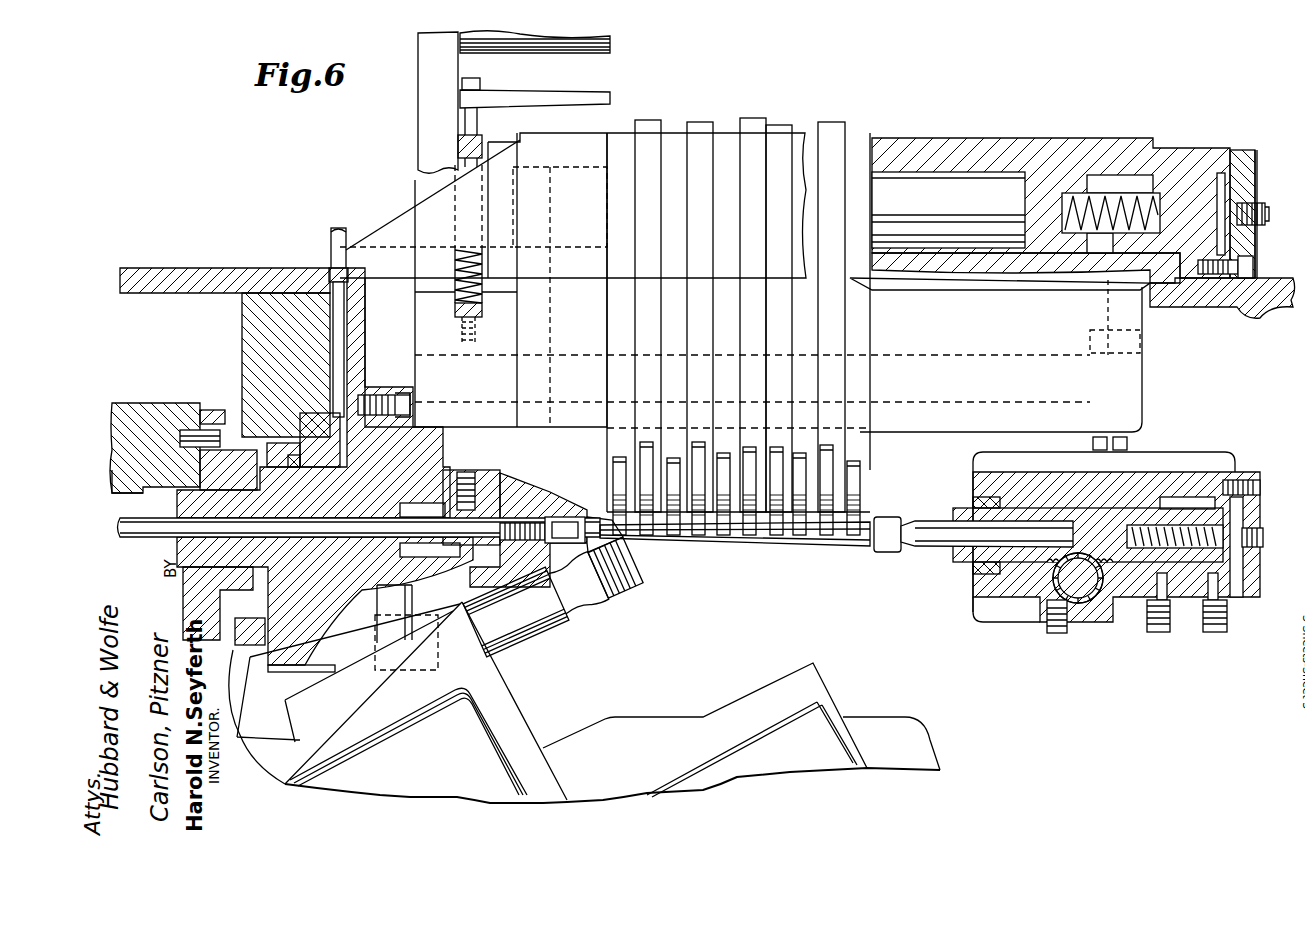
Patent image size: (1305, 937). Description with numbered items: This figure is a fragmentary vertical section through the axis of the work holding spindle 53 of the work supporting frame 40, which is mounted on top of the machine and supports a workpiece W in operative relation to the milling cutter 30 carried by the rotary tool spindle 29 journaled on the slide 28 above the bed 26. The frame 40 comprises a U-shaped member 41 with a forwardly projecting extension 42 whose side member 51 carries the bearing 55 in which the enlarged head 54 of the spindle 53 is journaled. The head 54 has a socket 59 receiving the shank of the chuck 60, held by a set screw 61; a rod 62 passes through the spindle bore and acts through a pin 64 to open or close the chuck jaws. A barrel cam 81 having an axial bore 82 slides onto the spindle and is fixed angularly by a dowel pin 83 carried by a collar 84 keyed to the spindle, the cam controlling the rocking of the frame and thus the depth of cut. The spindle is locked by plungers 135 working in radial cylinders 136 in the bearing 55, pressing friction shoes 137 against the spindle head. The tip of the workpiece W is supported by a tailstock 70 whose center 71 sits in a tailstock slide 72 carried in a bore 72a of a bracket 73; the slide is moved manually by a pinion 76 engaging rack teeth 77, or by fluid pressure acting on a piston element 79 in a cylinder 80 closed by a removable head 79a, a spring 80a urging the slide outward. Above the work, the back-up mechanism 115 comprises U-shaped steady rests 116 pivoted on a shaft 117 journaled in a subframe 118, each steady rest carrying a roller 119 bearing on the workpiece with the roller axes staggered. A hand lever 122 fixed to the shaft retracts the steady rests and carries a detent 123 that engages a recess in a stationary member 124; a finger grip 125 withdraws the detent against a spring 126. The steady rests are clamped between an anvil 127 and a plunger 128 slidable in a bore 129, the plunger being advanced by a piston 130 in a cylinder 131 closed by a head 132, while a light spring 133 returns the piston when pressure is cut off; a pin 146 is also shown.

The bed 26 is at (874, 715).
The slide 28 is at (515, 722).
The rotary tool spindle 29 is at (528, 634).
The milling cutter 30 is at (639, 592).
The second frame 40 is at (290, 246).
The U-shaped member 41 is at (1292, 282).
The forwardly projecting extension 42 is at (184, 268).
The side member 51 is at (245, 336).
The work holding spindle 53 is at (232, 578).
The enlarged head 54 is at (462, 478).
The bearing 55 is at (390, 400).
The recess or socket 59 is at (480, 492).
The chuck 60 is at (510, 500).
The set screw 61 is at (472, 483).
The rod 62 is at (325, 528).
The pin 64 is at (565, 518).
The tailstock 70 is at (1221, 450).
The center 71 is at (943, 521).
The tailstock slide 72 is at (1050, 510).
The bore 72a is at (980, 567).
The bracket 73 is at (975, 612).
The pinion 76 is at (1075, 604).
The rack teeth 77 is at (1112, 610).
The piston element 79 is at (1200, 480).
The removable head 79a is at (1245, 604).
The cylinder 80 is at (1243, 573).
The spring 80a is at (1168, 508).
The barrel type cam 81 is at (145, 404).
The axial bore 82 is at (132, 493).
The dowel pin 83 is at (191, 430).
The collar 84 is at (213, 410).
The back-up mechanism 115 is at (750, 119).
The steady rests 116 is at (655, 120).
The shaft 117 is at (960, 355).
The subframe 118 is at (400, 218).
The roller 119 is at (700, 534).
The hand lever 122 is at (418, 120).
The detent 123 is at (455, 315).
The member 124 is at (472, 425).
The finger grip 125 is at (544, 90).
The spring 126 is at (455, 296).
The anvil 127 is at (578, 165).
The plunger 128 is at (958, 182).
The bore 129 is at (948, 283).
The piston 130 is at (1180, 180).
The cylinder 131 is at (1210, 178).
The head 132 is at (1256, 185).
The spring 133 is at (1120, 198).
The plungers 135 is at (300, 468).
The cylinders 136 is at (298, 456).
The friction shoes 137 is at (345, 466).
The pin 146 is at (332, 236).
The workpiece W is at (775, 541).